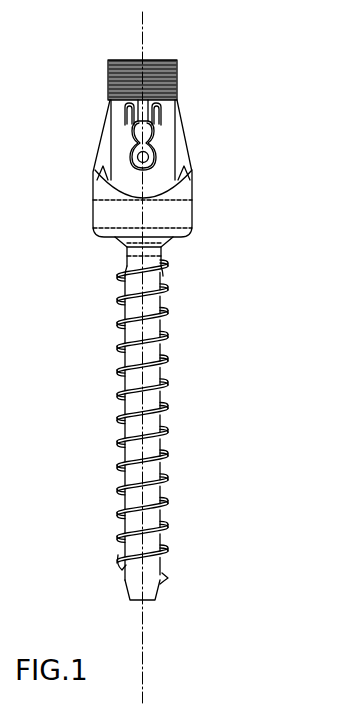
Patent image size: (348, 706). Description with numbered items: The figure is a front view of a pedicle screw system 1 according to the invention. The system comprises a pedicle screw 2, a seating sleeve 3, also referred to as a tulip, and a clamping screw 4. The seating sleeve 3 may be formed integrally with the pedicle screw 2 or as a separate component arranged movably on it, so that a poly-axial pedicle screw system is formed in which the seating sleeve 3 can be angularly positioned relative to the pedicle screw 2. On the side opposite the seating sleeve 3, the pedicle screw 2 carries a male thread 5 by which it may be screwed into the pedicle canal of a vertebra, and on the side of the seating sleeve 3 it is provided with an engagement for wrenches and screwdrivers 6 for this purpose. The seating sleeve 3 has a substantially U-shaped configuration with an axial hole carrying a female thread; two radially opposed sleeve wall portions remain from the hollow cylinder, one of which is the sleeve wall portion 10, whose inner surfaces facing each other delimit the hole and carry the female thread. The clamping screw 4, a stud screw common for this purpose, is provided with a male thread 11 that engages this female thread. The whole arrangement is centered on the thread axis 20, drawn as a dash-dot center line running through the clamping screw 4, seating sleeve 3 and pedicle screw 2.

The pedicle screw system 1 is at (197, 387).
The pedicle screw 2 is at (135, 394).
The seating sleeve 3 is at (203, 192).
The clamping screw 4 is at (120, 61).
The male thread 5 is at (168, 367).
The engagement for wrenches and screwdrivers 6 is at (126, 121).
The sleeve wall portion 10 is at (170, 120).
The male thread 11 is at (176, 71).
The thread axis 20 is at (143, 693).